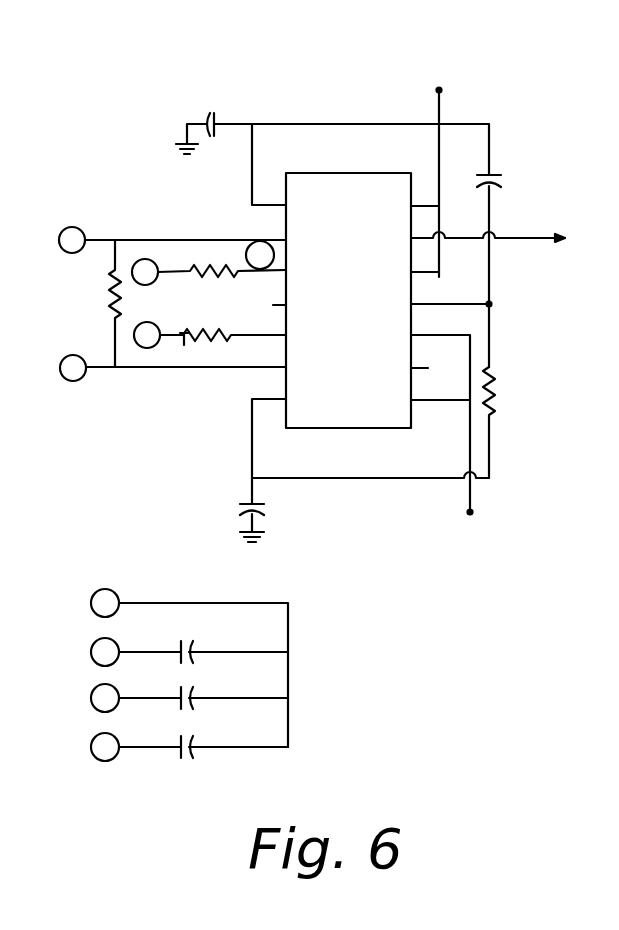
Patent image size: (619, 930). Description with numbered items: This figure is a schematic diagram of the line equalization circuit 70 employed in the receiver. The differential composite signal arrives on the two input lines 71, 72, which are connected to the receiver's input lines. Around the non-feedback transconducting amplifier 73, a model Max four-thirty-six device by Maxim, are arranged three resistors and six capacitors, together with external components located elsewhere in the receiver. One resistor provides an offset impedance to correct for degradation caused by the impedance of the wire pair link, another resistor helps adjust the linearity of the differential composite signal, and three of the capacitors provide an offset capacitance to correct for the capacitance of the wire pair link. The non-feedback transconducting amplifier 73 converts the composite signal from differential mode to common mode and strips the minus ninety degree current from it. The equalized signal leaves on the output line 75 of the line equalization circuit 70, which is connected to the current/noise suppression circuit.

The line equalization circuit 70 is at (325, 72).
The input line 71 is at (98, 238).
The input line 72 is at (100, 370).
The non-feedback transconducting amplifier 73 is at (350, 173).
The output line 75 is at (532, 236).